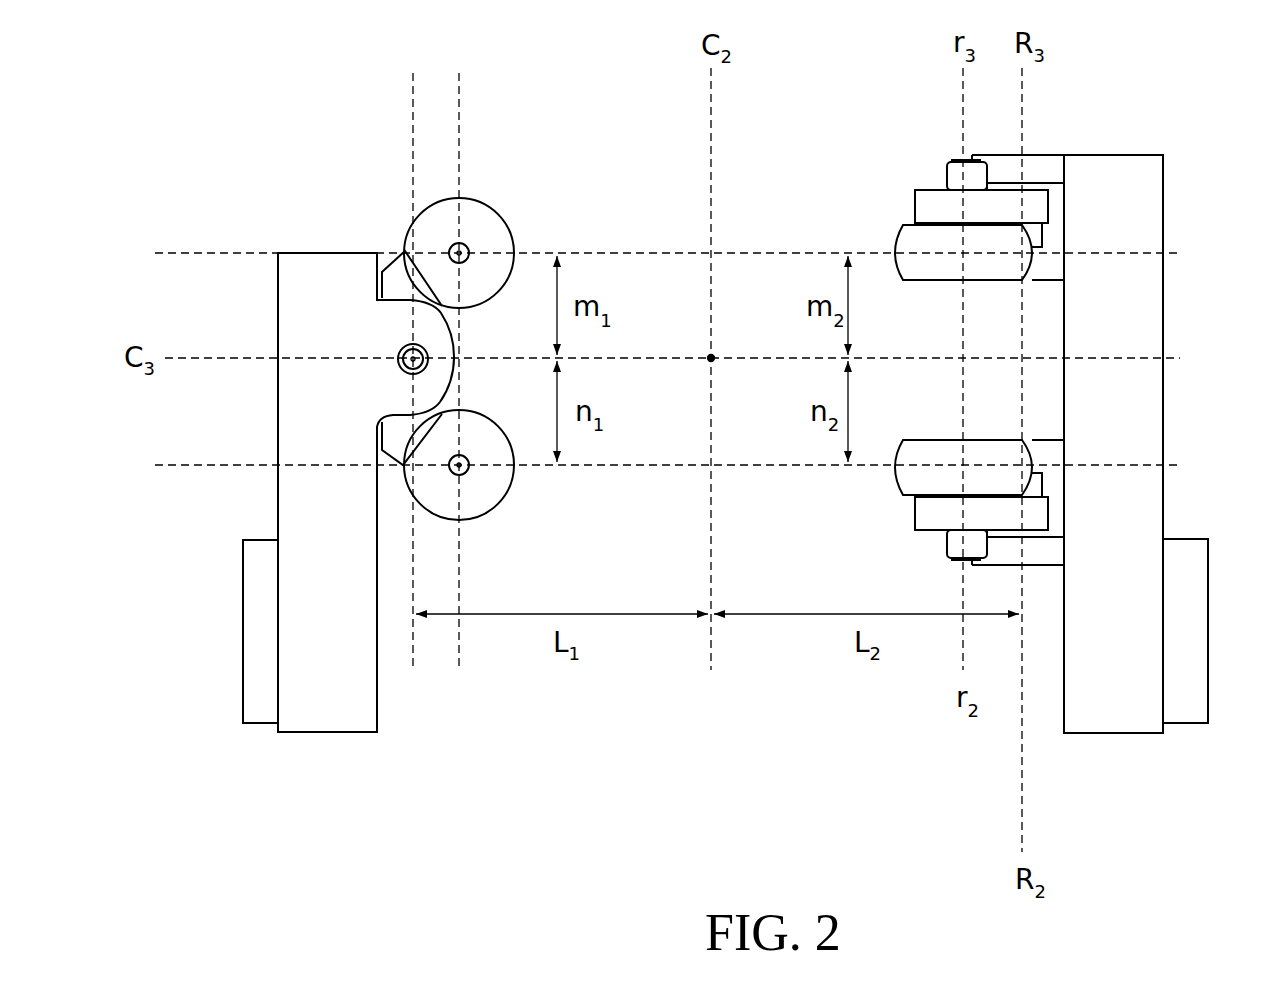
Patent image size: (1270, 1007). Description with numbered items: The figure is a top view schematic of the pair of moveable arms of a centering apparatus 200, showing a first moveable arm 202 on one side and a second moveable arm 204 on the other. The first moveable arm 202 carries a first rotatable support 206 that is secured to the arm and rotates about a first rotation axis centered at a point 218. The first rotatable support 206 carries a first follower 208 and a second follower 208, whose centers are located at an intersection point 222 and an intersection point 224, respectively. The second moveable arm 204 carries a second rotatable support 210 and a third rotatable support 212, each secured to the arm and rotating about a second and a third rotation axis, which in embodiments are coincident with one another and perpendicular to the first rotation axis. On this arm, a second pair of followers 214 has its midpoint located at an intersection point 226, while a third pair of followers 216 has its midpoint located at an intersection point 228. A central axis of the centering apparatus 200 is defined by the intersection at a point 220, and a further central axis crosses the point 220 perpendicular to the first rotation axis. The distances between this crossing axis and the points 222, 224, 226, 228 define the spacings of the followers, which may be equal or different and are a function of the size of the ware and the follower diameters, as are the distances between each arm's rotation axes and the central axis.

The centering apparatus 200 is at (278, 86).
The first moveable arm 202 is at (313, 702).
The second moveable arm 204 is at (1112, 710).
The first rotatable support 206 is at (400, 272).
The follower 208 is at (473, 223).
The second rotatable support 210 is at (1030, 515).
The third rotatable support 212 is at (1030, 205).
The second pair of followers 214 is at (920, 472).
The third pair of followers 216 is at (958, 255).
The point 218 is at (400, 350).
The point 220 is at (720, 368).
The intersection point 222 is at (473, 243).
The intersection point 224 is at (467, 476).
The intersection point 226 is at (958, 473).
The intersection point 228 is at (918, 243).